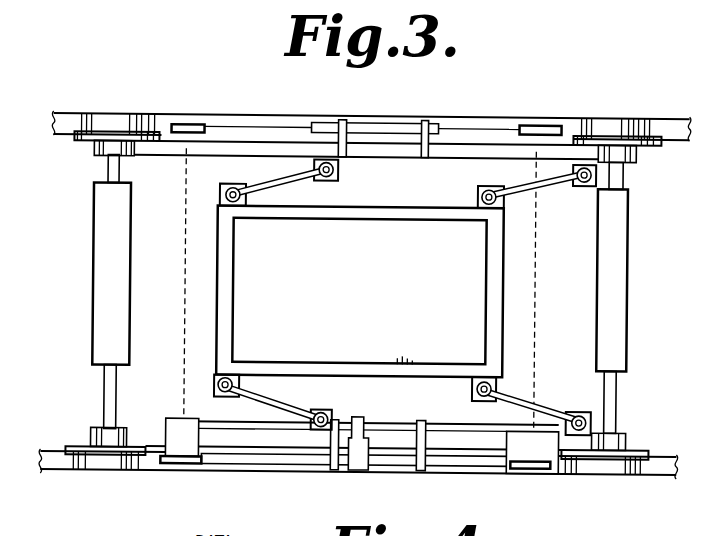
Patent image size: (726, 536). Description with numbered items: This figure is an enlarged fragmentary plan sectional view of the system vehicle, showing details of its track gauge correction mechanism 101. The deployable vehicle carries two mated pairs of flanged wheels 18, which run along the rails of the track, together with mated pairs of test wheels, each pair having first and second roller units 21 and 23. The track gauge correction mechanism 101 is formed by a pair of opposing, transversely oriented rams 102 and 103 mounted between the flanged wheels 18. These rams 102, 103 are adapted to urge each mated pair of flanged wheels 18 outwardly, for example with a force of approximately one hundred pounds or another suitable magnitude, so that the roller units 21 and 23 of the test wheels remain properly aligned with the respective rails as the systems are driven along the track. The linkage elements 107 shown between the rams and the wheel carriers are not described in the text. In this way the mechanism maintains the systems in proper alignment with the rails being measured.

The flanged wheels 18 is at (113, 118).
The first roller unit 21 is at (179, 126).
The second roller unit 23 is at (517, 124).
The link rod with ball joints 107 is at (278, 183).
The track gauge correction mechanism 101 is at (93, 307).
The ram 102 is at (640, 240).
The ram 103 is at (93, 212).